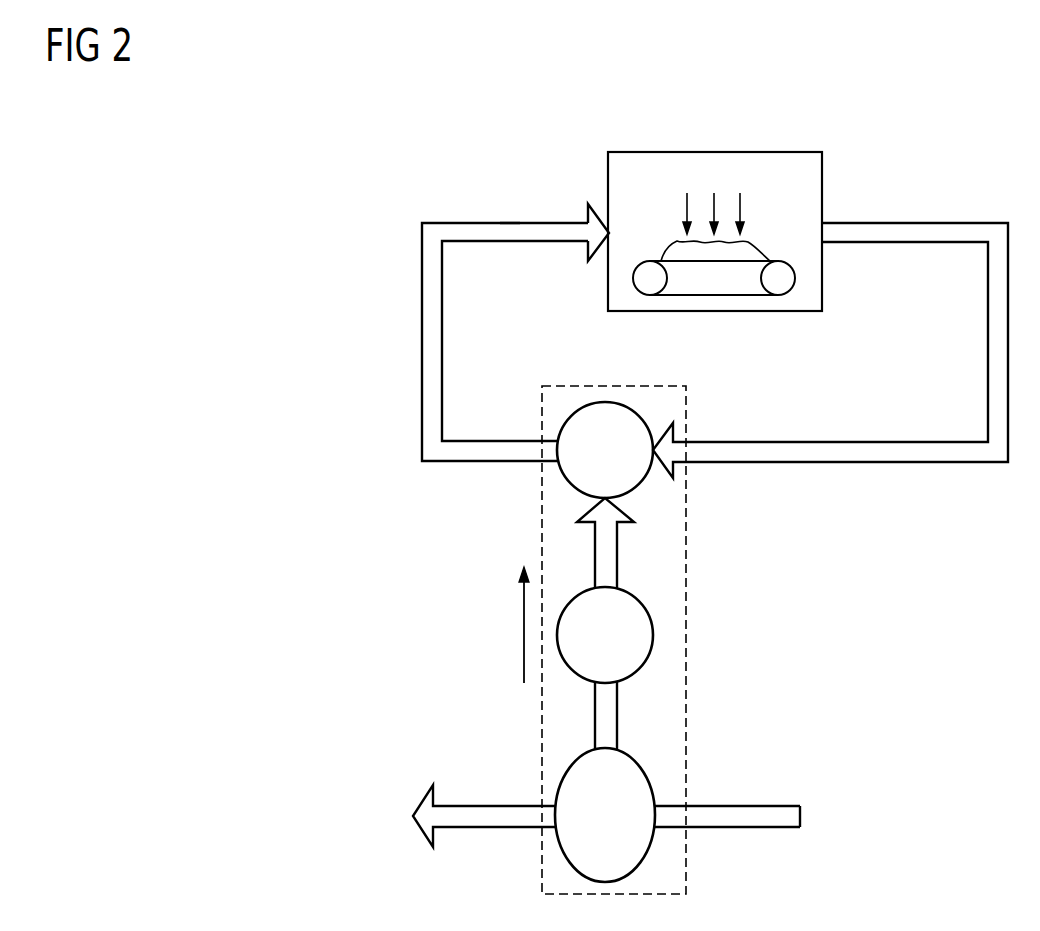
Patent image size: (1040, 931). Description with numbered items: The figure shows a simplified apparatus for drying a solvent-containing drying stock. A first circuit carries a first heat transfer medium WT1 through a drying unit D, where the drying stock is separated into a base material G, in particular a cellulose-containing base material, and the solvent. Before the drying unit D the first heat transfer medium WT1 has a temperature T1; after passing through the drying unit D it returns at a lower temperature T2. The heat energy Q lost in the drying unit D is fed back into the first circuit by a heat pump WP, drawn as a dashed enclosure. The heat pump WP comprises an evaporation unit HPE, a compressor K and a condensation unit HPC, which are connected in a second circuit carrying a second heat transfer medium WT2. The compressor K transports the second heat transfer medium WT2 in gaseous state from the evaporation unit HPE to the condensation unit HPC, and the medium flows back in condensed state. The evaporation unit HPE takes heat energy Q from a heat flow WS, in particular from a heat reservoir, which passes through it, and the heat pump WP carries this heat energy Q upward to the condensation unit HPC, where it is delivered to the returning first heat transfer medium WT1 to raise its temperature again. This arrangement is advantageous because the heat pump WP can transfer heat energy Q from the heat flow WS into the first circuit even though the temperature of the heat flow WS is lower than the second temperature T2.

The drying unit D is at (718, 151).
The base material G is at (745, 256).
The first heat transfer medium WT1 is at (457, 239).
The temperature before the drying unit T1 is at (510, 232).
The temperature after the drying unit T2 is at (940, 232).
The heat pump WP is at (687, 658).
The condensation unit HPC is at (605, 450).
The second heat transfer medium WT2 is at (602, 561).
The compressor K is at (605, 635).
The heat energy Q is at (511, 625).
The evaporation unit HPE is at (578, 780).
The heat flow WS is at (727, 812).